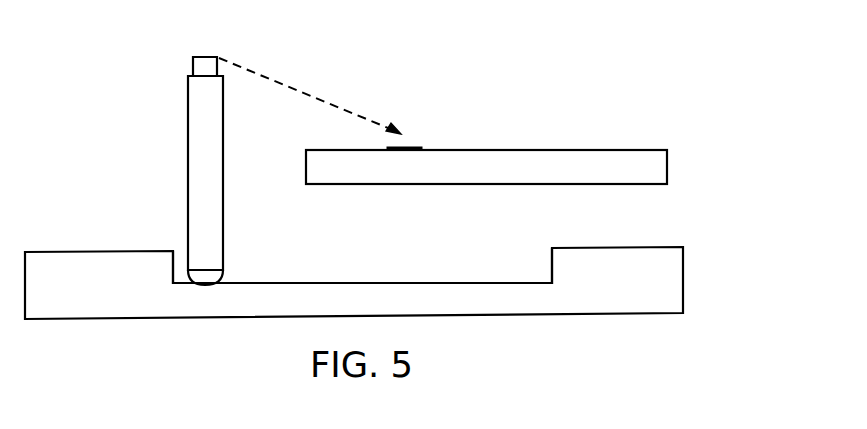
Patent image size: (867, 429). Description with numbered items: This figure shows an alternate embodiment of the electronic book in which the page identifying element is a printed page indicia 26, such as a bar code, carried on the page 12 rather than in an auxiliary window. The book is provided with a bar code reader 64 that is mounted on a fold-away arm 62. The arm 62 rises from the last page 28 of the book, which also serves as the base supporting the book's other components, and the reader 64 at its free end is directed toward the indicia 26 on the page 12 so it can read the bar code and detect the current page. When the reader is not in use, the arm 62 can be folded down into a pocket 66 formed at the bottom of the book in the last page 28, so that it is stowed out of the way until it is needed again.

The page 12 is at (667, 167).
The printed page indicia 26 is at (416, 148).
The last page 28 is at (683, 280).
The fold-away arm 62 is at (212, 197).
The bar code reader 64 is at (217, 57).
The pocket 66 is at (457, 266).